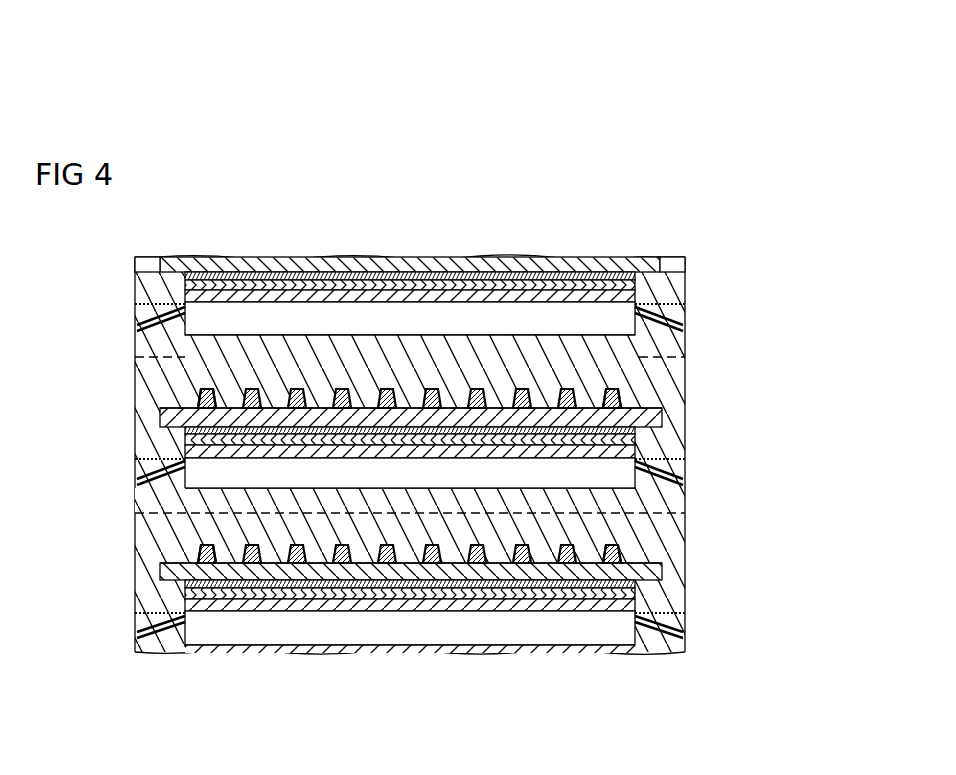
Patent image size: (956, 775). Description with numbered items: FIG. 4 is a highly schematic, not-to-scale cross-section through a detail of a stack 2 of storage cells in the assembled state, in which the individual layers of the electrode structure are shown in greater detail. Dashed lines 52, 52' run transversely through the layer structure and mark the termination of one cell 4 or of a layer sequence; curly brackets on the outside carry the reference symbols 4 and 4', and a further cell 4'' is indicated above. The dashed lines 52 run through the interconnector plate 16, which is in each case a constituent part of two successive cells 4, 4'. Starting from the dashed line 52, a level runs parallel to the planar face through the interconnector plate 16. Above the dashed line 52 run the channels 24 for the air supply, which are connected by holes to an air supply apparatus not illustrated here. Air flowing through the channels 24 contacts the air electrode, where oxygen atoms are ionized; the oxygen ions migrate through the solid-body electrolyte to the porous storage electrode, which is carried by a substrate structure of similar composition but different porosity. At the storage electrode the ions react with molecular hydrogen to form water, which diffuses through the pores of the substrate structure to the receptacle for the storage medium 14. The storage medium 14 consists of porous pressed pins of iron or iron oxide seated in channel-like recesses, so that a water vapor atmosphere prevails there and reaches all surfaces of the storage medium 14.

The stack 2 is at (645, 222).
The storage cell 4 is at (463, 457).
The successive storage cell 4' is at (466, 598).
The storage cell 4'' is at (491, 451).
The storage medium 14 is at (185, 388).
The interconnector plate 16 is at (135, 612).
The channels 24 is at (185, 500).
The dashed line 52 is at (434, 528).
The dashed line 52' is at (437, 344).